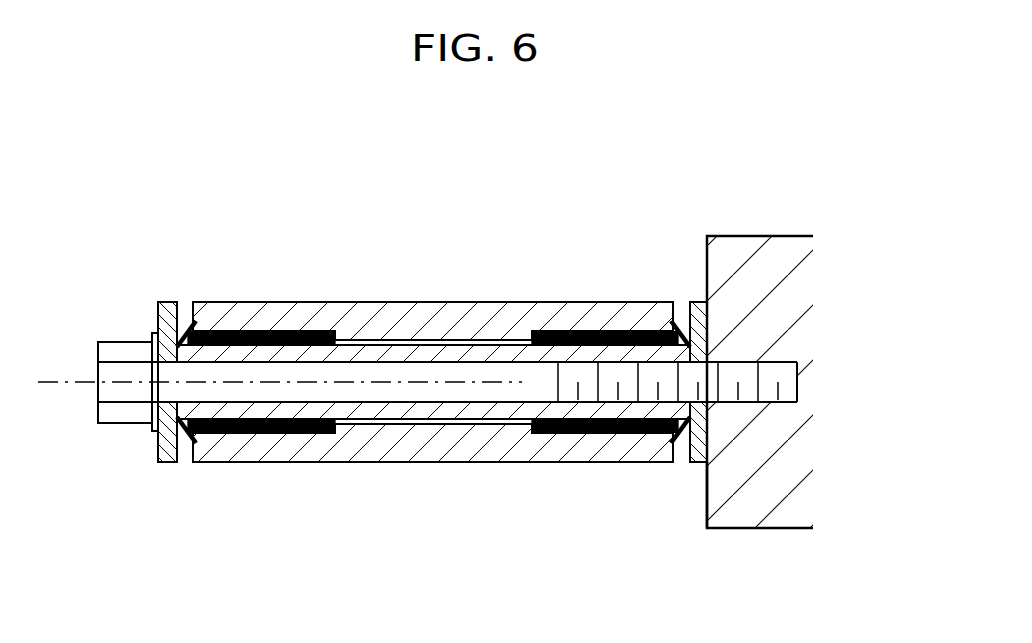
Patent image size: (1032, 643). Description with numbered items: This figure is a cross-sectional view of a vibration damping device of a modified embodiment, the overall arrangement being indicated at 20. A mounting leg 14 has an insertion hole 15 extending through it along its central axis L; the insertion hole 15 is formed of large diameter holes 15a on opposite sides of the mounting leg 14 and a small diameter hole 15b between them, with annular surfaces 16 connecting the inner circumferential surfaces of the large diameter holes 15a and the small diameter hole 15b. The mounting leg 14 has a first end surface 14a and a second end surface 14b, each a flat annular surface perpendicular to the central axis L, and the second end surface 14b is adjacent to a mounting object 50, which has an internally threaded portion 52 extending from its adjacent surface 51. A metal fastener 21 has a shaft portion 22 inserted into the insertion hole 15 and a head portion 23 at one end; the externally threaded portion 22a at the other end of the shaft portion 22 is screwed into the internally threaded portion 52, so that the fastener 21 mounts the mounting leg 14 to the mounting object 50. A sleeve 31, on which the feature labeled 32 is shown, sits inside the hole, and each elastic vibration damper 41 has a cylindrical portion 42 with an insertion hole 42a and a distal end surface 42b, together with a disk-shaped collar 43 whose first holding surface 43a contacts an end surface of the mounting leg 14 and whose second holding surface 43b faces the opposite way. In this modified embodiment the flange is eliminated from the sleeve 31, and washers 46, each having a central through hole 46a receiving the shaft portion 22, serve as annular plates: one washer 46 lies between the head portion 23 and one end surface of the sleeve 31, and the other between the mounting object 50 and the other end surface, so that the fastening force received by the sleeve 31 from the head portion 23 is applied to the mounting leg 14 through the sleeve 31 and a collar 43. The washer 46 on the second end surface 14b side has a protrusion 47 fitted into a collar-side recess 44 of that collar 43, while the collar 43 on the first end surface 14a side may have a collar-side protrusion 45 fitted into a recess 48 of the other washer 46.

The mounting leg 14 is at (425, 302).
The first end surface 14a is at (197, 462).
The second end surface 14b is at (668, 465).
The insertion hole 15 is at (516, 362).
The large diameter holes 15a is at (279, 326).
The small diameter hole 15b is at (390, 342).
The annular surfaces 16 is at (322, 437).
The fastening structure 20 is at (174, 288).
The fastener 21 is at (97, 395).
The shaft portion 22 is at (446, 404).
The externally threaded portion 22a is at (783, 355).
The head portion 23 is at (126, 425).
The sleeve 31 is at (378, 442).
The axis 32 is at (515, 372).
The elastic vibration damper 41 is at (290, 437).
The cylindrical portion 42 is at (262, 420).
The insertion hole 42a is at (253, 433).
The distal end surface 42b is at (337, 331).
The collar 43 is at (182, 318).
The first holding surface 43a is at (190, 325).
The second holding surface 43b is at (158, 331).
The collar-side recess 44 is at (690, 465).
The collar-side protrusion 45 is at (156, 332).
The washers 46 is at (158, 308).
The through hole 46a is at (150, 378).
The protrusion 47 is at (690, 317).
The recess 48 is at (170, 463).
The mounting object 50 is at (727, 530).
The adjacent surface 51 is at (710, 480).
The internally threaded portion 52 is at (793, 390).
The central axis L is at (459, 304).